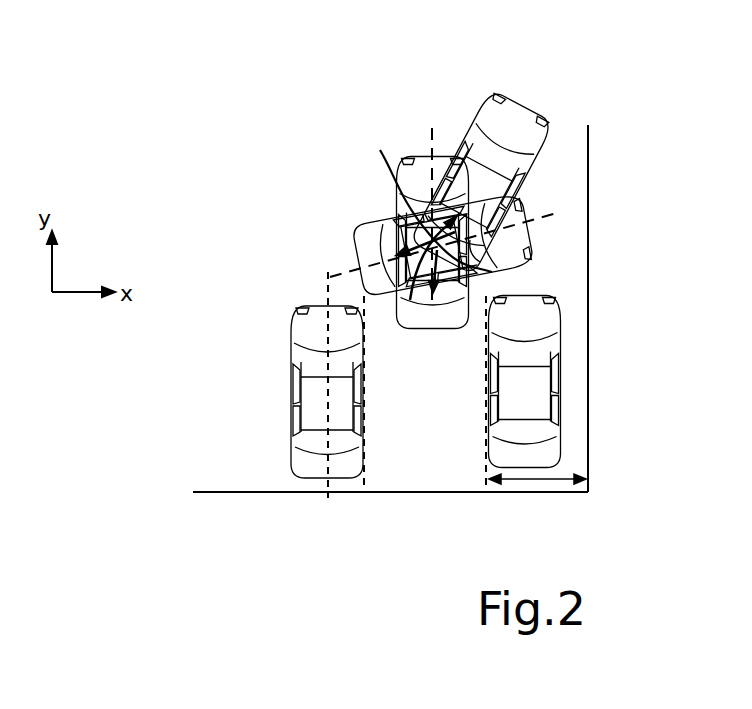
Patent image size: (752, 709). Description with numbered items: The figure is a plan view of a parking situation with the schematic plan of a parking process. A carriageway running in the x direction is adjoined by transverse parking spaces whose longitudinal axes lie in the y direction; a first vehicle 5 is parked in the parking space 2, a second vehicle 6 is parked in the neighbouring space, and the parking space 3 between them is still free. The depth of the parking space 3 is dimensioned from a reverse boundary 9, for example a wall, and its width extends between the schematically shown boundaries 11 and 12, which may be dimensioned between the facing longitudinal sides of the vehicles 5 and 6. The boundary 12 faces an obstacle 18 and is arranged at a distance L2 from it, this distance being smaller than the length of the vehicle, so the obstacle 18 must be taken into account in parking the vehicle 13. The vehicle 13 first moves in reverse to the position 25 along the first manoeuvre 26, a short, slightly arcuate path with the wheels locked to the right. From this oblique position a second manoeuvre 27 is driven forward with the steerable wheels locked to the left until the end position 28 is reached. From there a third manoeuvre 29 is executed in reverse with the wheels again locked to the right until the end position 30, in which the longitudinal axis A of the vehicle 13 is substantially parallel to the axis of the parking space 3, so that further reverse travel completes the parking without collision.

The parking space 2 is at (283, 481).
The parking space 3 is at (447, 481).
The first vehicle 5 is at (288, 360).
The second vehicle 6 is at (560, 348).
The reverse boundary 9 is at (400, 493).
The boundary 11 is at (365, 479).
The boundary 12 is at (488, 483).
The vehicle 13 is at (340, 166).
The obstacle 18 is at (590, 248).
The position 25 is at (352, 237).
The first manoeuvre 26 is at (414, 272).
The second manoeuvre 27 is at (421, 198).
The end position 28 is at (482, 98).
The third manoeuvre 29 is at (470, 240).
The end position 30 is at (453, 326).
The distance L2 is at (566, 481).
The longitudinal axis A is at (430, 127).